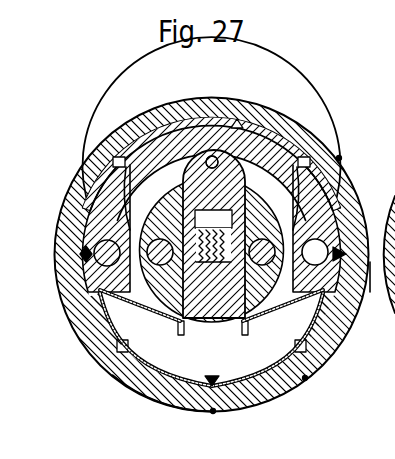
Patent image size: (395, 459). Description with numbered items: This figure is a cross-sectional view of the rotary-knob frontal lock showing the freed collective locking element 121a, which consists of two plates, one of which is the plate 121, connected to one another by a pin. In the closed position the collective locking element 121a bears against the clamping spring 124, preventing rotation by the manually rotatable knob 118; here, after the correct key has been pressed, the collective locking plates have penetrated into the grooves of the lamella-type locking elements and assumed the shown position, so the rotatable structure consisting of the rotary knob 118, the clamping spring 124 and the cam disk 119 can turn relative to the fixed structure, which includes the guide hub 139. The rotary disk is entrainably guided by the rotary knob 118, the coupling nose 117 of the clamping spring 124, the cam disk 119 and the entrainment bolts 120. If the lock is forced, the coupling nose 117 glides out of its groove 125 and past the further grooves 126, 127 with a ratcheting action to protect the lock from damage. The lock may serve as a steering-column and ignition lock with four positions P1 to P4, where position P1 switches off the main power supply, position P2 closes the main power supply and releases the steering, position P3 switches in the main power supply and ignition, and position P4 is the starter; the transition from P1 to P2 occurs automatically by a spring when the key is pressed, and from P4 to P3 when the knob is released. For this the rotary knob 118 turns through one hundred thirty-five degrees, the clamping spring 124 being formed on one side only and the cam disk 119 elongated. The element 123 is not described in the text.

The entrainment bolts 120 is at (64, 236).
The rotary knob 118 is at (165, 393).
The collective locking element 121a is at (270, 127).
The projection 123 is at (239, 118).
The cam disk 119 is at (136, 164).
The guide hub 139 is at (252, 208).
The plate of collective locking element 121 is at (249, 321).
The clamping spring 124 is at (184, 331).
The groove 125 is at (236, 387).
The further groove 126 is at (115, 352).
The coupling nose 117 is at (212, 377).
The further groove 127 is at (84, 257).
The position P1 is at (205, 430).
The position P2 is at (320, 386).
The position P3 is at (374, 291).
The position P4 is at (353, 168).